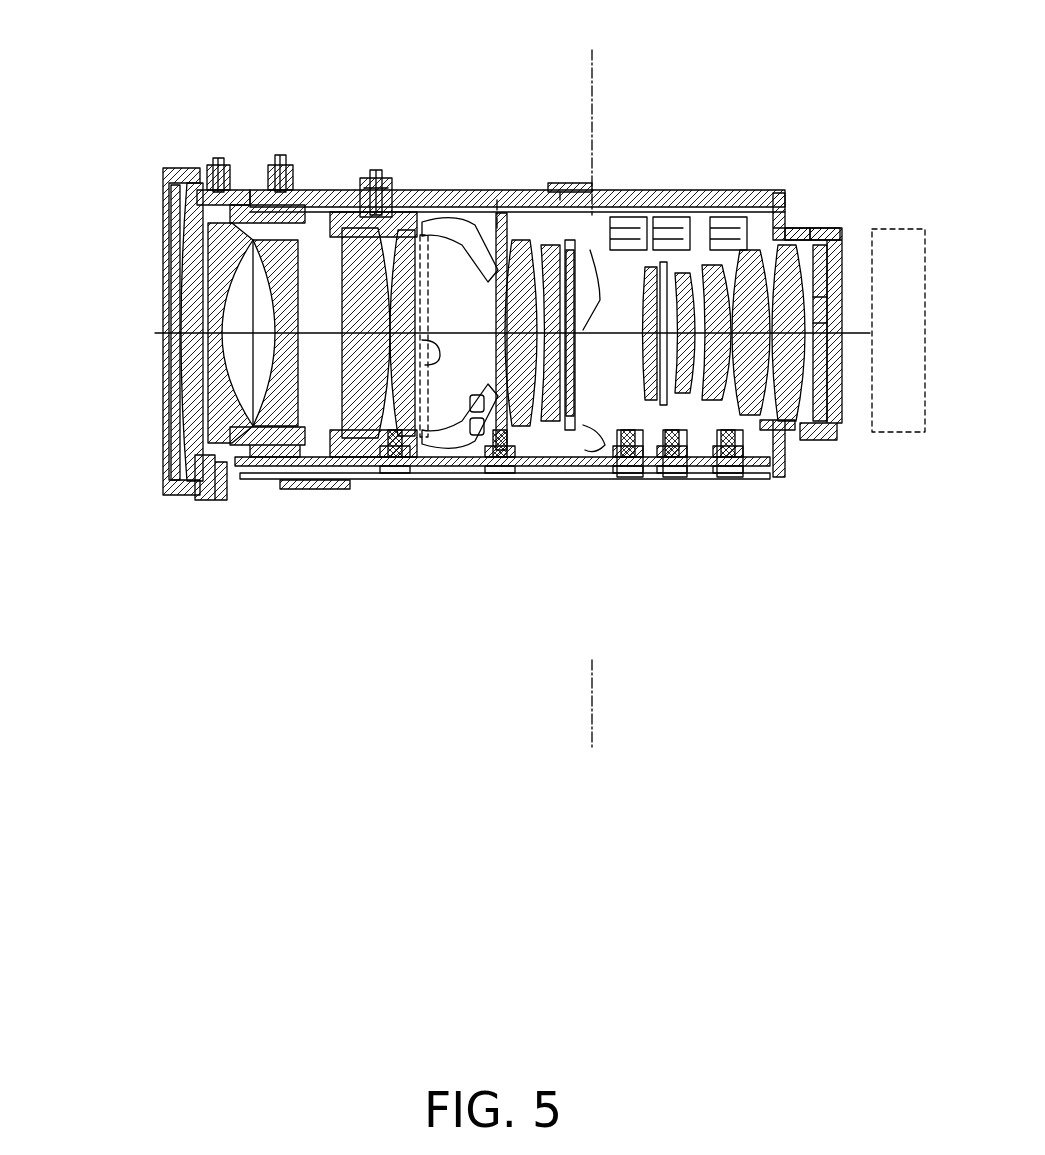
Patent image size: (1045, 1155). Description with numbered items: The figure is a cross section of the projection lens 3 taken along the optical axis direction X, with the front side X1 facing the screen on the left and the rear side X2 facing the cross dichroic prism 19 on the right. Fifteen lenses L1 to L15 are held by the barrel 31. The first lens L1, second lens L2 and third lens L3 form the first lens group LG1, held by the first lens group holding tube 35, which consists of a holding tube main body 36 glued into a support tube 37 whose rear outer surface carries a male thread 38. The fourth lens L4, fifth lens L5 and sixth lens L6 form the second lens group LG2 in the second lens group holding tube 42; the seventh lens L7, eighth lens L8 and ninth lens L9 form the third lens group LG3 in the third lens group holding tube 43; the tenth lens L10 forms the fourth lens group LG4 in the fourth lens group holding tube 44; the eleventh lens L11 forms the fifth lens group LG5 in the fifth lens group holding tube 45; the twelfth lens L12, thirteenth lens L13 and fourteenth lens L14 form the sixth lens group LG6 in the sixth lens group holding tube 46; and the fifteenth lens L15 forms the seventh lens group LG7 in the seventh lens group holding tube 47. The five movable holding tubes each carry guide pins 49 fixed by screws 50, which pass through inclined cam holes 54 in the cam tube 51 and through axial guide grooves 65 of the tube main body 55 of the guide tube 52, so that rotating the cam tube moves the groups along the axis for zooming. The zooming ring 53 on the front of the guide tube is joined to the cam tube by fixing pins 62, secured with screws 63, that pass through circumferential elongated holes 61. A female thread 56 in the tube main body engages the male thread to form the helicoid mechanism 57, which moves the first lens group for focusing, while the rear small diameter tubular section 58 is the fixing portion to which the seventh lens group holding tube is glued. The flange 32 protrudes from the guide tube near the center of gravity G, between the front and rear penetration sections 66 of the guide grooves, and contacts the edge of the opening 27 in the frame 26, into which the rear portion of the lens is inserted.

The projection lens 3 is at (834, 72).
The cross dichroic prism 19 is at (888, 229).
The frame 26 is at (598, 714).
The opening 27 is at (597, 192).
The barrel 31 is at (616, 150).
The flange 32 is at (575, 185).
The first lens group holding tube 35 is at (215, 84).
The holding tube main body 36 is at (182, 180).
The support tube 37 is at (228, 188).
The male thread 38 is at (235, 185).
The second lens group holding tube 42 is at (398, 225).
The third lens group holding tube 43 is at (538, 212).
The fourth lens group holding tube 44 is at (648, 220).
The fifth lens group holding tube 45 is at (700, 218).
The sixth lens group holding tube 46 is at (768, 193).
The seventh lens group holding tube 47 is at (826, 230).
The guide pin 49 is at (392, 462).
The screw 50 is at (398, 473).
The cam tube 51 is at (478, 195).
The guide tube 52 is at (497, 98).
The zooming ring 53 is at (317, 190).
The cam hole 54 is at (450, 362).
The tube main body 55 is at (515, 185).
The female thread 56 is at (287, 185).
The helicoid mechanism 57 is at (228, 98).
The small diameter tubular section 58 is at (800, 228).
The elongated hole 61 is at (365, 200).
The fixing pin 62 is at (386, 192).
The screw 63 is at (375, 200).
The guide groove 65 is at (452, 470).
The penetration section 66 is at (440, 480).
The center of gravity G is at (497, 200).
The optical axis direction X is at (155, 335).
The front side X1 is at (100, 333).
The rear side X2 is at (125, 334).
The first lens L1 is at (180, 455).
The second lens L2 is at (220, 455).
The third lens L3 is at (275, 435).
The fourth lens L4 is at (345, 445).
The fifth lens L5 is at (385, 445).
The sixth lens L6 is at (424, 445).
The seventh lens L7 is at (505, 450).
The eighth lens L8 is at (548, 440).
The ninth lens L9 is at (566, 440).
The tenth lens L10 is at (655, 435).
The eleventh lens L11 is at (692, 425).
The twelfth lens L12 is at (725, 430).
The thirteenth lens L13 is at (752, 430).
The fourteenth lens L14 is at (790, 430).
The fifteenth lens L15 is at (842, 393).
The first lens group LG1 is at (150, 620).
The second lens group LG2 is at (300, 620).
The third lens group LG3 is at (585, 620).
The fourth lens group LG4 is at (632, 620).
The fifth lens group LG5 is at (712, 620).
The sixth lens group LG6 is at (895, 586).
The seventh lens group LG7 is at (935, 620).